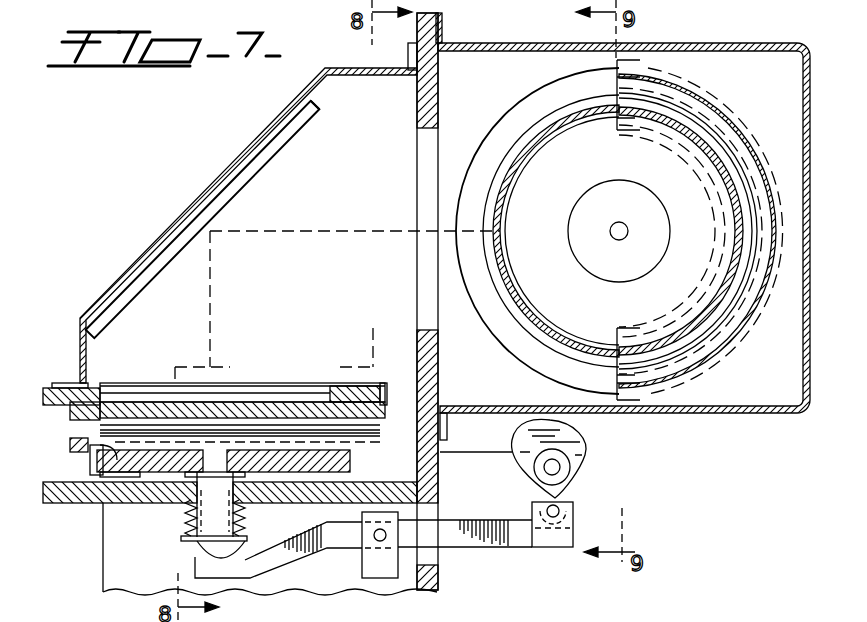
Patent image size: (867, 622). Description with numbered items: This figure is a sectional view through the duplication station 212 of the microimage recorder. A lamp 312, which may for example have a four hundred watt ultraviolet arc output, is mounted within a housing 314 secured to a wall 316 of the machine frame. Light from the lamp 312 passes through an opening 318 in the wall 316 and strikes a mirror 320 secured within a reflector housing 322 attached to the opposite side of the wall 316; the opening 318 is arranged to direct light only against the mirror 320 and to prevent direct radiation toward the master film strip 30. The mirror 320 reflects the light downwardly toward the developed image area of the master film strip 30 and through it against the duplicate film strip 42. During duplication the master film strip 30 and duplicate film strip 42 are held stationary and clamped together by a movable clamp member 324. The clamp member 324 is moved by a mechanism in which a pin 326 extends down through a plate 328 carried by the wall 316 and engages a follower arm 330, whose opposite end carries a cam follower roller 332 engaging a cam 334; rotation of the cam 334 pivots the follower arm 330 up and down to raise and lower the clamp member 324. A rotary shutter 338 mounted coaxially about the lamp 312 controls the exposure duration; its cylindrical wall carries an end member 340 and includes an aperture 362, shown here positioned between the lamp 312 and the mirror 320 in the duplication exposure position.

The duplication station 212 is at (150, 183).
The reflector housing 322 is at (250, 160).
The mirror 320 is at (318, 128).
The opening 318 is at (417, 137).
The wall 316 is at (438, 13).
The housing 314 is at (748, 413).
The end member 340 is at (562, 94).
The aperture 362 is at (527, 358).
The lamp 312 is at (527, 140).
The rotary shutter 338 is at (724, 350).
The pin 326 is at (274, 402).
The master film strip 30 is at (118, 418).
The clamp member 324 is at (165, 503).
The duplicate film strip 42 is at (90, 460).
The plate 328 is at (79, 503).
The follower arm 330 is at (268, 565).
The cam follower roller 332 is at (565, 502).
The cam 334 is at (587, 434).